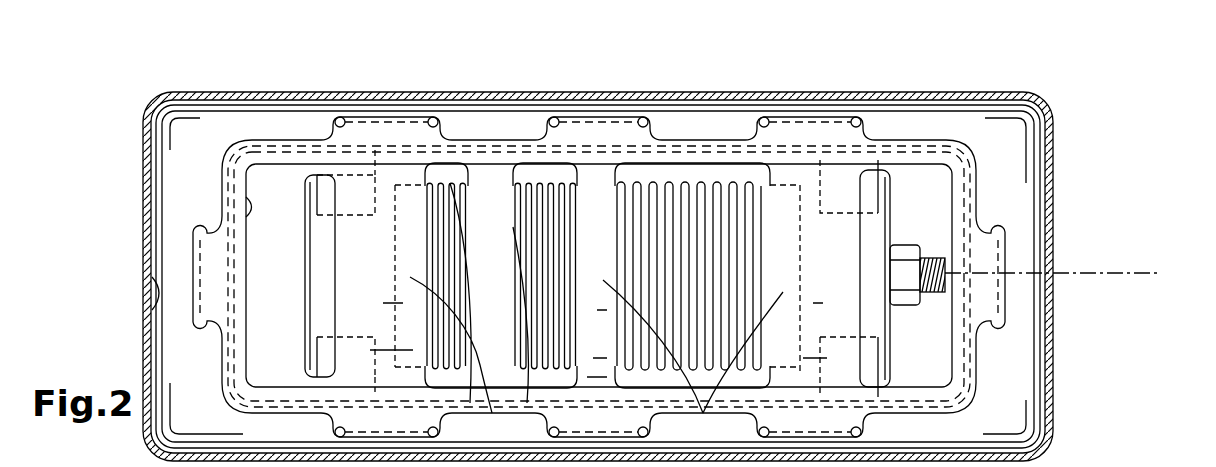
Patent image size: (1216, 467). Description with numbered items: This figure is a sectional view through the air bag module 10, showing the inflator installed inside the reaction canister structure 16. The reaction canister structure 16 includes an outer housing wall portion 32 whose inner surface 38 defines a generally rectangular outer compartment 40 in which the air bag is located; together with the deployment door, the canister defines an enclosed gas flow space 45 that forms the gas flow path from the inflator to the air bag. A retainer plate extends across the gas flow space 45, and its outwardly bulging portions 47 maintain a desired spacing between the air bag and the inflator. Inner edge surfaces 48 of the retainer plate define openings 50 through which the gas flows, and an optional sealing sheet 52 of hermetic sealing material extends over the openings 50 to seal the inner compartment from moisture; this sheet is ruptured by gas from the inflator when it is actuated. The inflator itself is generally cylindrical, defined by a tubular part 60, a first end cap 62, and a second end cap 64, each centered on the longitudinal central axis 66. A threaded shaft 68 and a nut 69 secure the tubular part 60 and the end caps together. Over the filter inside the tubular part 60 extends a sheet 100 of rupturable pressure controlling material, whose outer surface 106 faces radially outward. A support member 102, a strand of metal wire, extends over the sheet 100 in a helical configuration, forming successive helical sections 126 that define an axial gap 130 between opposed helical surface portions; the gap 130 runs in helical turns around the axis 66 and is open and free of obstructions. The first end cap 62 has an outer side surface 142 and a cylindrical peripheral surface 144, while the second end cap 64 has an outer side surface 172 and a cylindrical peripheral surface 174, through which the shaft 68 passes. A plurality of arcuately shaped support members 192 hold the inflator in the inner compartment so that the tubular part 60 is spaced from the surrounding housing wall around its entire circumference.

The spring assembly 10 is at (160, 81).
The reaction canister structure 16 is at (148, 111).
The outer housing wall portion 32 is at (147, 177).
The inner surface 38 is at (156, 309).
The outer compartment 40 is at (172, 360).
The gas flow space 45 is at (268, 224).
The outwardly bulging portions 47 is at (596, 312).
The inner edge surfaces 48 is at (247, 214).
The openings 50 is at (268, 188).
The sealing sheet 52 is at (530, 350).
The tubular part 60 is at (448, 184).
The first end cap 62 is at (290, 190).
The second end cap 64 is at (903, 162).
The longitudinal central axis 66 is at (1135, 273).
The threaded shaft 68 is at (947, 270).
The nut 69 is at (906, 252).
The sheet of rupturable pressure controlling material 100 is at (538, 224).
The support member 102 is at (624, 222).
The outer surface 106 is at (552, 228).
The helical sections 126 is at (660, 184).
The gap 130 is at (728, 182).
The outer side surface 142 is at (305, 172).
The cylindrical peripheral surface 144 is at (318, 176).
The outer side surface 172 is at (892, 206).
The cylindrical peripheral surface 174 is at (889, 171).
The support members 192 is at (330, 212).